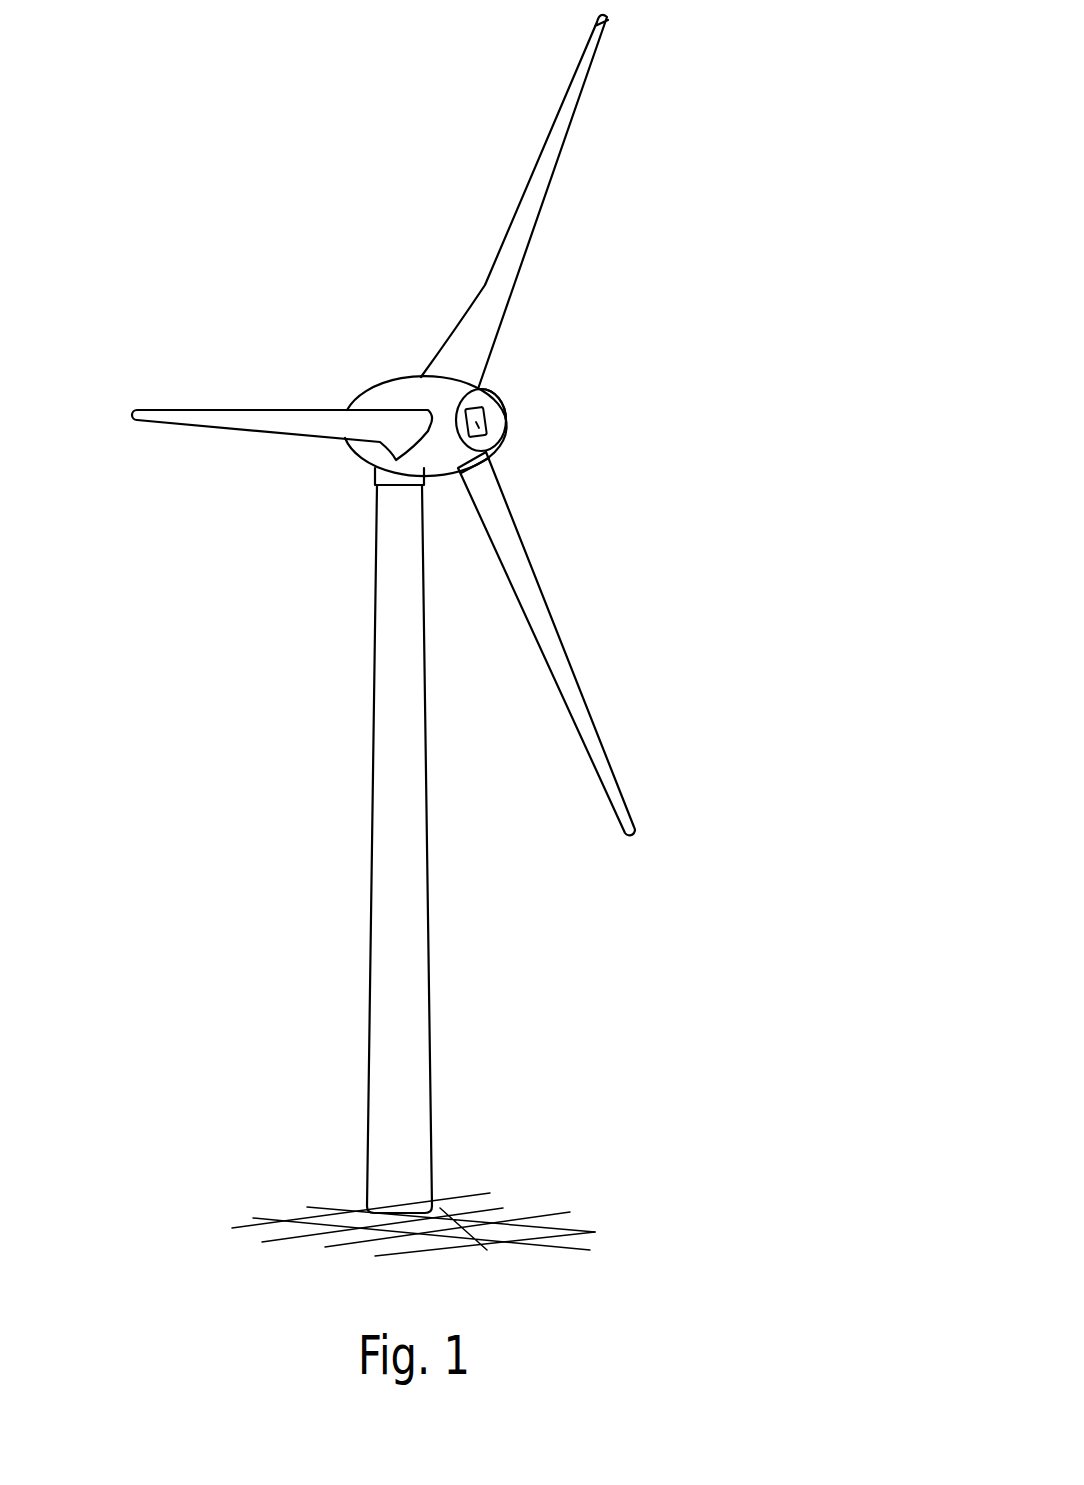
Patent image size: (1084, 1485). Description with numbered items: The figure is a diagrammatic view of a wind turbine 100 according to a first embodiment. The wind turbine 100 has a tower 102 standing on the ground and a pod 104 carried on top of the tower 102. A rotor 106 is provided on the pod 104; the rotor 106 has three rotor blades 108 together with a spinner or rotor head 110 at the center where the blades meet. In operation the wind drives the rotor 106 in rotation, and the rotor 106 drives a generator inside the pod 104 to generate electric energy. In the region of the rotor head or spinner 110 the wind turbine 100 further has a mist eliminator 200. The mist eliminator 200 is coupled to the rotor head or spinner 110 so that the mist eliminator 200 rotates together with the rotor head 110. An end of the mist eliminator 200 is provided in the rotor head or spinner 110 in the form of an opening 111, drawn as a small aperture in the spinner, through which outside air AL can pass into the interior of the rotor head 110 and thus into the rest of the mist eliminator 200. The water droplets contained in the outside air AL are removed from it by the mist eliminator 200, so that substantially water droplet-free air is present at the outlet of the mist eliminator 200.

The wind turbine 100 is at (300, 578).
The tower 102 is at (420, 943).
The pod 104 is at (386, 392).
The rotor 106 is at (662, 300).
The rotor blade 108 is at (198, 413).
The spinner or rotor head 110 is at (514, 379).
The opening 111 is at (497, 408).
The mist eliminator 200 is at (490, 448).
The outside air AL is at (532, 432).